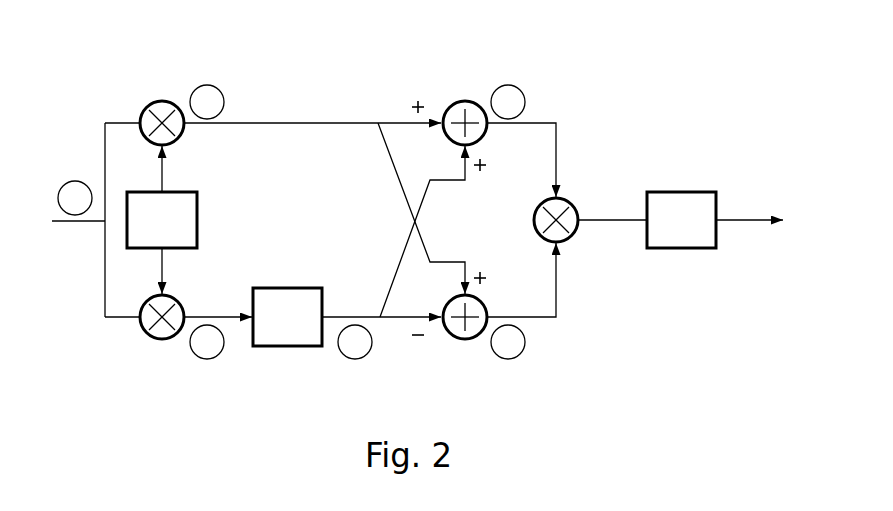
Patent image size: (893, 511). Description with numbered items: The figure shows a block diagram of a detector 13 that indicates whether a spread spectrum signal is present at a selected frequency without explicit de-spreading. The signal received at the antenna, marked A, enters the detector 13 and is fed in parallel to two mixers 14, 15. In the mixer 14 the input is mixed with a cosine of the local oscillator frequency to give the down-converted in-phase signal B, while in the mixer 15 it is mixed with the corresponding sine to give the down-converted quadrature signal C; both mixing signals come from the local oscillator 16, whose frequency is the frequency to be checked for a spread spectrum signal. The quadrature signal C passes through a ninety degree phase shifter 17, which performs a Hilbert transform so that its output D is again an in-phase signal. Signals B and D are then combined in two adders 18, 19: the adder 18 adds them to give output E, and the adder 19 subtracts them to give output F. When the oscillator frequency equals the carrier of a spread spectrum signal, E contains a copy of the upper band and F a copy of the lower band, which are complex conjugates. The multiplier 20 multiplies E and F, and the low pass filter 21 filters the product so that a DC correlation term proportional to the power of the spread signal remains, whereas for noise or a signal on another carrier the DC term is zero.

The detector 13 is at (698, 110).
The mixer 14 is at (147, 105).
The mixer 15 is at (145, 338).
The local oscillator 16 is at (198, 210).
The 90 degree phase shifter 17 is at (280, 347).
The adder 18 is at (448, 103).
The adder 19 is at (447, 335).
The multiplier 20 is at (575, 203).
The low pass filter 21 is at (670, 250).